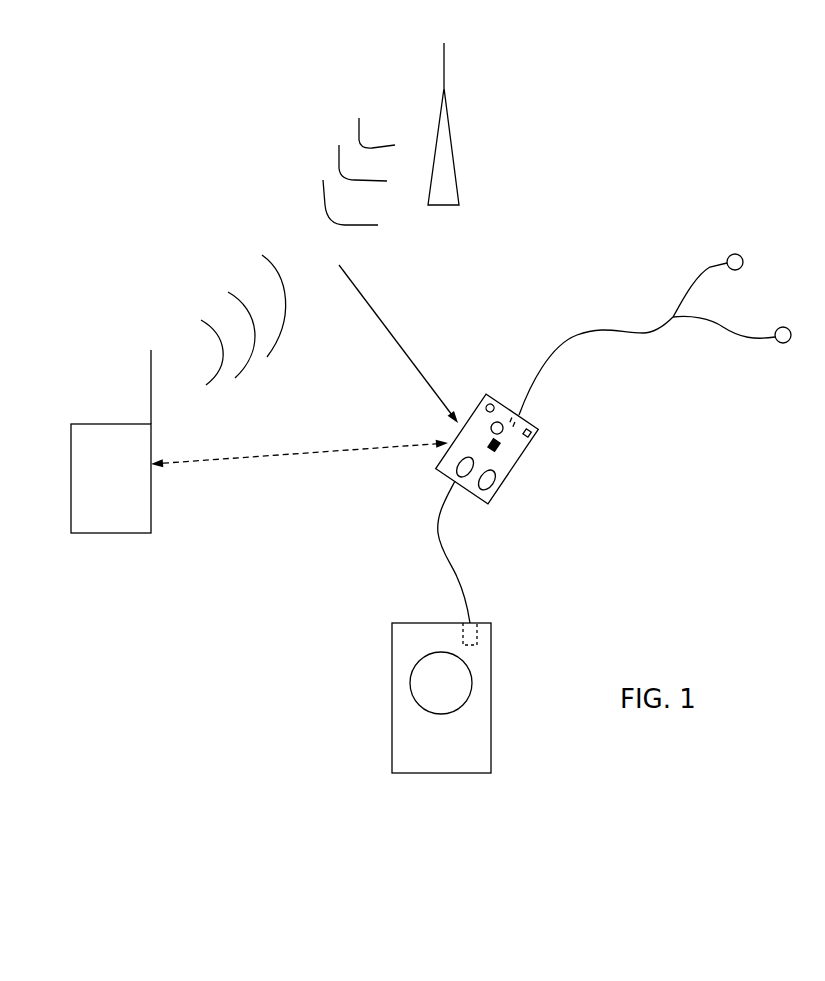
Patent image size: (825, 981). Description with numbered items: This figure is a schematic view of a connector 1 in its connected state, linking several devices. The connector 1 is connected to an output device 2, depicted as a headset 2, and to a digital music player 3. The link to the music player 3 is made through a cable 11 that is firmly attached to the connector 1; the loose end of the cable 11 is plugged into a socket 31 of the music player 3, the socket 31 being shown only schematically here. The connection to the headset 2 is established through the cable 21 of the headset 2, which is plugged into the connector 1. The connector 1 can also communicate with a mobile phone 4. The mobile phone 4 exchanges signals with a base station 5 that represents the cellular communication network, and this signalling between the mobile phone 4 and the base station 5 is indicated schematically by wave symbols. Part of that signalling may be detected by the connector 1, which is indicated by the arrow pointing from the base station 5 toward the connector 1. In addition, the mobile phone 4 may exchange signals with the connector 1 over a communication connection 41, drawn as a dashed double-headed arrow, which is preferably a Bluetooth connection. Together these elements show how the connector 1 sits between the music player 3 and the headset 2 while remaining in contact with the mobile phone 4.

The connector 1 is at (518, 457).
The headset 2 is at (733, 253).
The digital music player 3 is at (400, 712).
The mobile phone 4 is at (111, 522).
The base station 5 is at (448, 166).
The cable 11 is at (445, 557).
The cable of the headset 21 is at (588, 333).
The socket 31 is at (469, 633).
The communication connection 41 is at (280, 453).